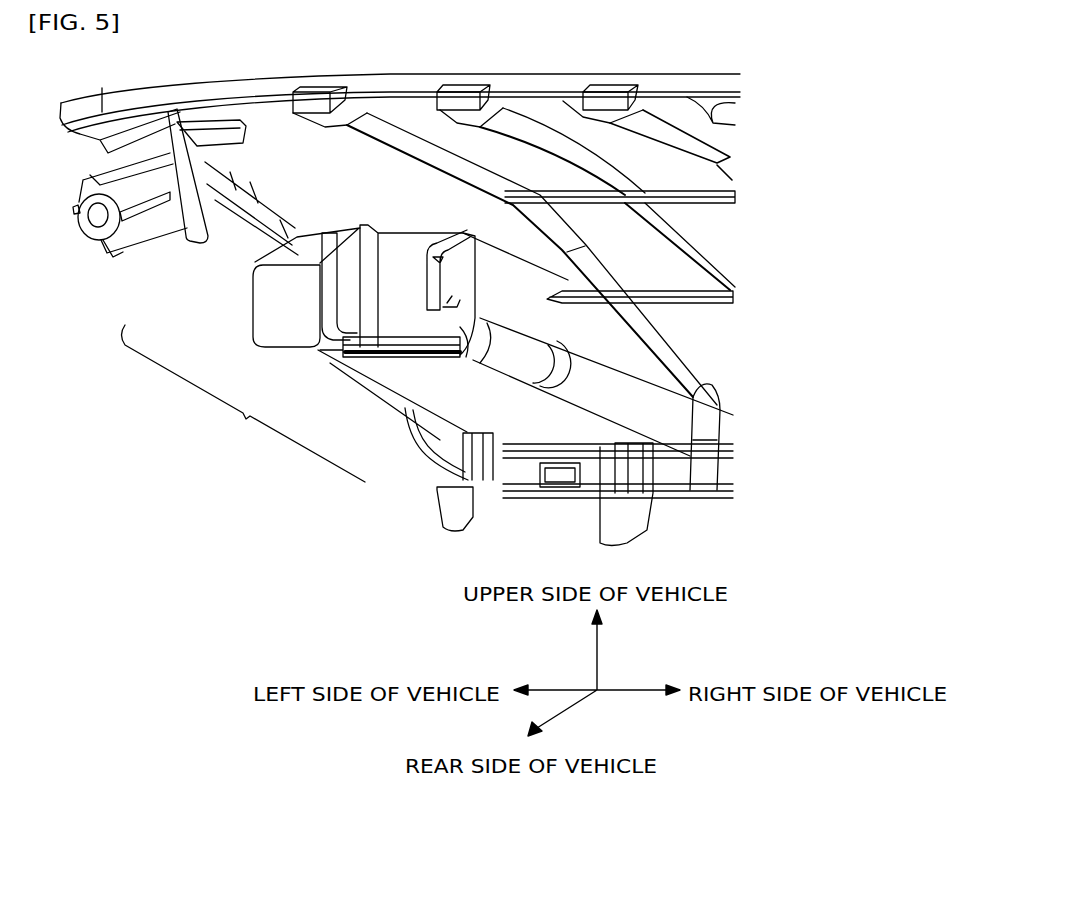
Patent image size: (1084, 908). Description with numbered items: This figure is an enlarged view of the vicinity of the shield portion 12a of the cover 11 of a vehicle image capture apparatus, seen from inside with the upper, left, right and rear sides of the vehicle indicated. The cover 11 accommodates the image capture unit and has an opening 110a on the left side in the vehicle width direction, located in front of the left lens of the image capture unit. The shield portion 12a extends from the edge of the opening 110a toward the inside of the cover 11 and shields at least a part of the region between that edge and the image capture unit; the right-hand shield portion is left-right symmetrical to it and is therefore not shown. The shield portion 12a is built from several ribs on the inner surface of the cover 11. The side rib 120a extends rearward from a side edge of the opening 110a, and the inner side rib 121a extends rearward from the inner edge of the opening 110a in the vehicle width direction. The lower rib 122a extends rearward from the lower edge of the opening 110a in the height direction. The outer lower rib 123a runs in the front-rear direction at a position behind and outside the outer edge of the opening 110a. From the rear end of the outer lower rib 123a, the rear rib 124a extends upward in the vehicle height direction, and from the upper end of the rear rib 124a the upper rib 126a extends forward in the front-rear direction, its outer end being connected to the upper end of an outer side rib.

The cover 11 is at (270, 113).
The opening 110a is at (410, 268).
The side rib 120a is at (400, 352).
The inner side rib 121a is at (440, 330).
The lower rib 122a is at (372, 352).
The outer lower rib 123a is at (343, 350).
The rear rib 124a is at (293, 300).
The upper rib 126a is at (253, 278).
The shield portion 12a is at (244, 403).